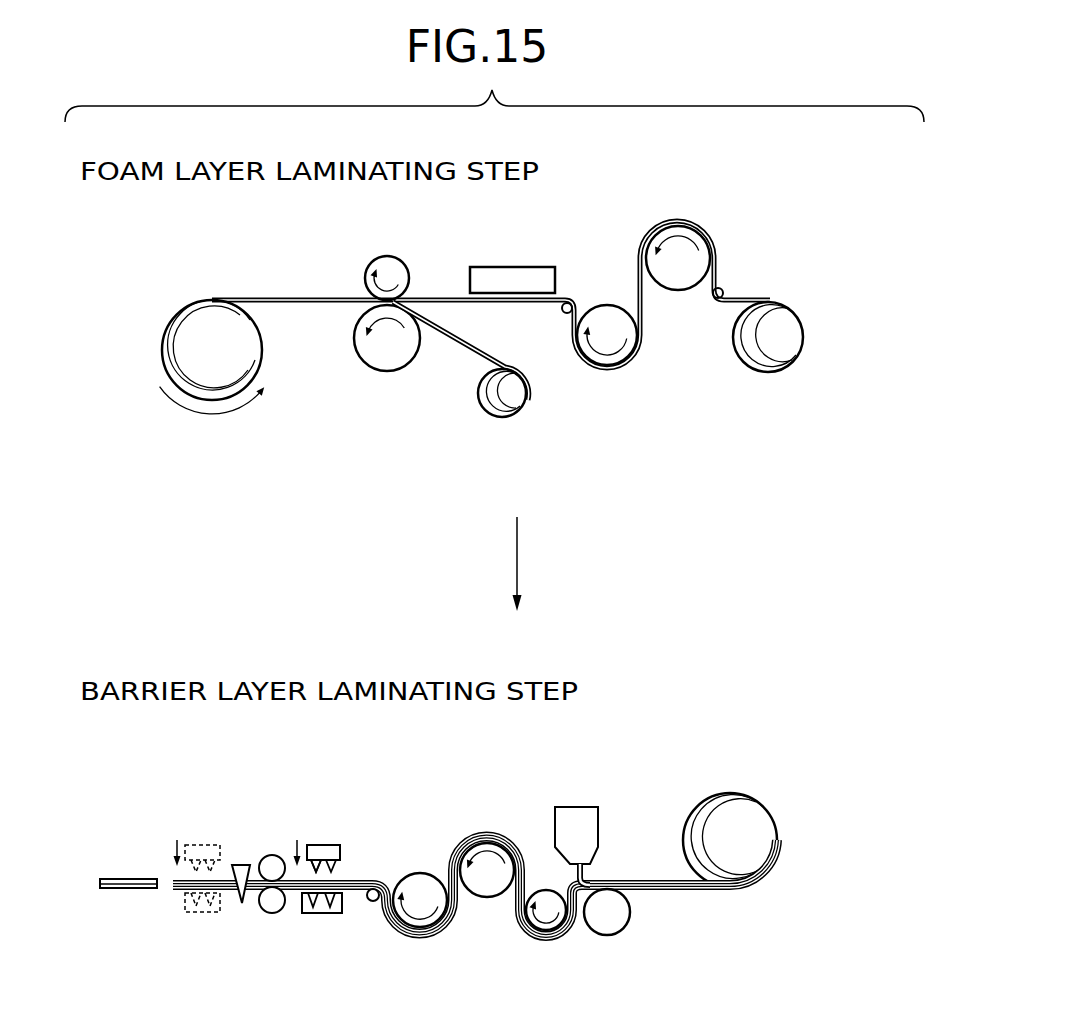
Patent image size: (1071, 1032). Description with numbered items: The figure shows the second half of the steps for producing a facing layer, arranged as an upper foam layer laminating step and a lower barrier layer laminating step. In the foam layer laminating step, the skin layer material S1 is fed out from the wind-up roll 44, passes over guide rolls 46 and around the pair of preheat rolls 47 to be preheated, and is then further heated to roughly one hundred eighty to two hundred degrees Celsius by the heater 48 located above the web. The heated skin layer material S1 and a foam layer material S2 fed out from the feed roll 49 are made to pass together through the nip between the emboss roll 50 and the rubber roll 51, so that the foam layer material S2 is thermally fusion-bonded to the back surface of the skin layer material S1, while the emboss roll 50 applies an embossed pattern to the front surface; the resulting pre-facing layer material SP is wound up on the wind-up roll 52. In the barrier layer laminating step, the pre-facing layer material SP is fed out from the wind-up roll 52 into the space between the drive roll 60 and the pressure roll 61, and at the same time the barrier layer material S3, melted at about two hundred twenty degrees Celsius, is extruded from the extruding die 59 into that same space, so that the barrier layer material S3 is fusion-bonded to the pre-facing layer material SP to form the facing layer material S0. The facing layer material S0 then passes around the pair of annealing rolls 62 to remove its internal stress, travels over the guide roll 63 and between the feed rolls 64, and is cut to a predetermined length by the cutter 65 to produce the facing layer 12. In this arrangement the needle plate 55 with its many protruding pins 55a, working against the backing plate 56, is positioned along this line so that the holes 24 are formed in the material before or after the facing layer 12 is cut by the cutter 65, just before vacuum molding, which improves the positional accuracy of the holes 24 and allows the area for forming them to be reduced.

The facing layer 12 is at (127, 877).
The holes 24 is at (292, 878).
The wind-up roll 44 is at (785, 313).
The guide rolls 46 is at (565, 319).
The preheat rolls 47 is at (602, 310).
The heater 48 is at (530, 268).
The feed roll 49 is at (500, 419).
The emboss roll 50 is at (386, 262).
The rubber roll 51 is at (386, 367).
The wind-up roll 52 is at (173, 327).
The needle plate 55 is at (188, 845).
The protruding pins 55a is at (331, 870).
The backing plate 56 is at (322, 915).
The extruding die 59 is at (583, 808).
The drive roll 60 is at (548, 896).
The pressure roll 61 is at (605, 933).
The annealing rolls 62 is at (418, 876).
The guide roll 63 is at (373, 903).
The feed rolls 64 is at (270, 855).
The cutter 65 is at (242, 862).
The pre-facing layer material SP is at (311, 292).
The facing layer material S0 is at (355, 891).
The skin layer material S1 is at (444, 298).
The foam layer material S2 is at (456, 346).
The barrier layer material S3 is at (590, 879).